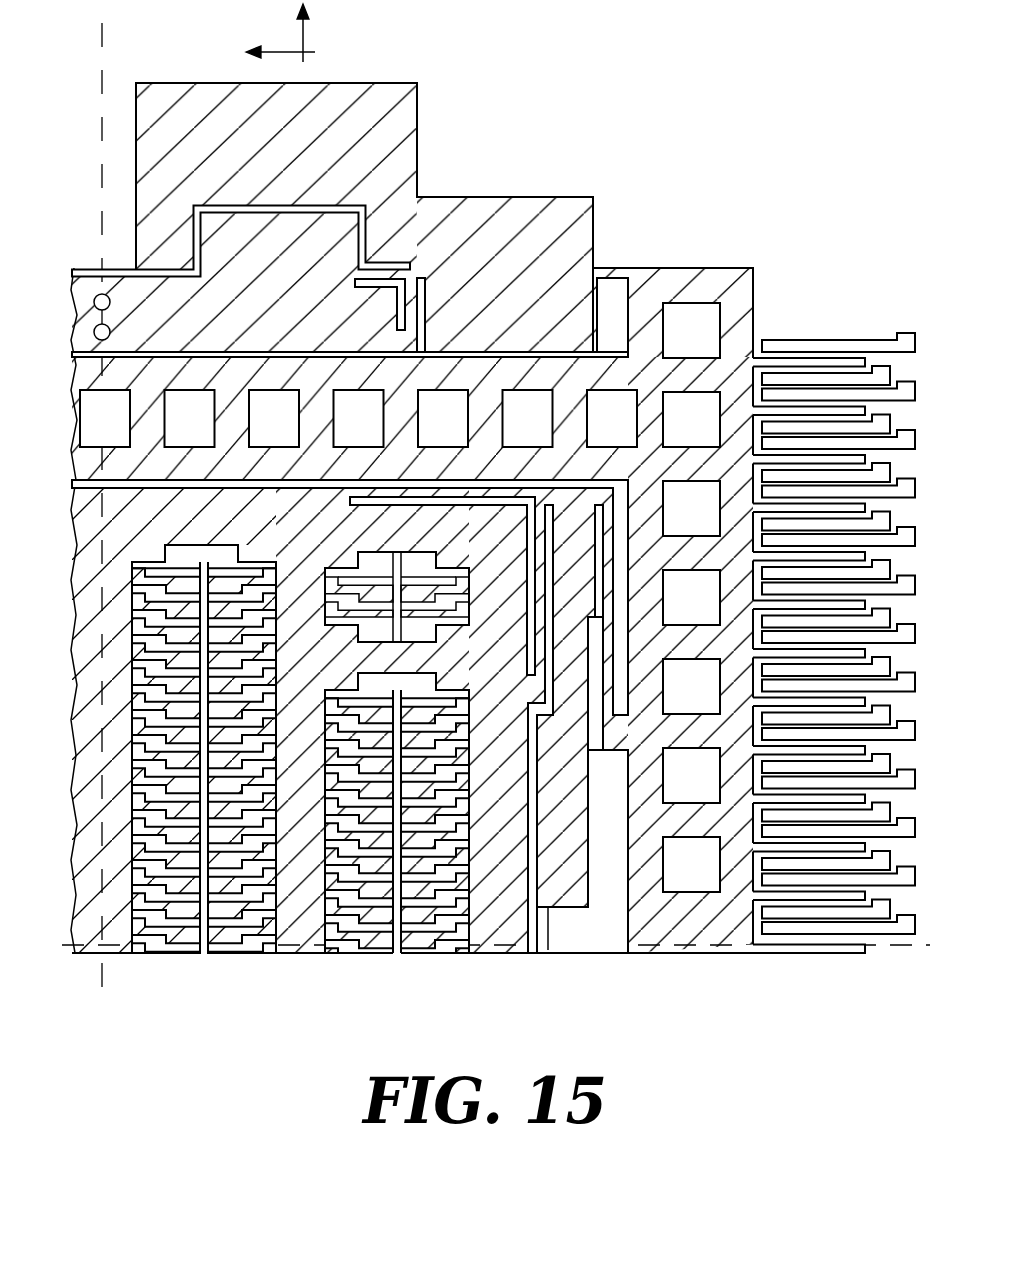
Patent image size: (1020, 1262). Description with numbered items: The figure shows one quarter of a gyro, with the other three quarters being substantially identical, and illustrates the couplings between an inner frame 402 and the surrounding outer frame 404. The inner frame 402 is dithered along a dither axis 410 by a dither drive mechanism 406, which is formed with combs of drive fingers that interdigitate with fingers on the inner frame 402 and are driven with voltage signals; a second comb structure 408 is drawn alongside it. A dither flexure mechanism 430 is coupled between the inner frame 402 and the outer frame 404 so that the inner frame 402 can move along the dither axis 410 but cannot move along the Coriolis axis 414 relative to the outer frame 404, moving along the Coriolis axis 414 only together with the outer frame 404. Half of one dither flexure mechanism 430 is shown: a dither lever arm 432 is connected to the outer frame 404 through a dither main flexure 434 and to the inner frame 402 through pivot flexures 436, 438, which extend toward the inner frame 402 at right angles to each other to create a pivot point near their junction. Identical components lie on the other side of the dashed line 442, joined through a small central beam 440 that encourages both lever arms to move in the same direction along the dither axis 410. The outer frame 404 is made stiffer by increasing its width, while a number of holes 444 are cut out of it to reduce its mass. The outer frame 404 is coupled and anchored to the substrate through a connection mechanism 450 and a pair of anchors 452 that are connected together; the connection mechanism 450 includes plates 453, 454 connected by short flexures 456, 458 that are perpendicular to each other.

The inner frame 402 is at (358, 541).
The outer frame 404 is at (683, 268).
The dither drive mechanism 406 is at (213, 545).
The interdigitated comb structure 408 is at (407, 553).
The dither axis 410 is at (272, 50).
The Coriolis axis 414 is at (306, 42).
The dither flexure mechanism 430 is at (610, 915).
The dither lever arm 432 is at (589, 782).
The dither main flexure 434 is at (609, 640).
The pivot flexure 436 is at (522, 479).
The pivot flexure 438 is at (531, 541).
The central beam 440 is at (546, 940).
The dashed line 442 is at (888, 945).
The holes 444 is at (715, 344).
The connection mechanism 450 is at (560, 161).
The anchors 452 is at (100, 295).
The plate 453 is at (420, 125).
The plate 454 is at (300, 307).
The short flexure 456 is at (397, 262).
The short flexure 458 is at (421, 285).